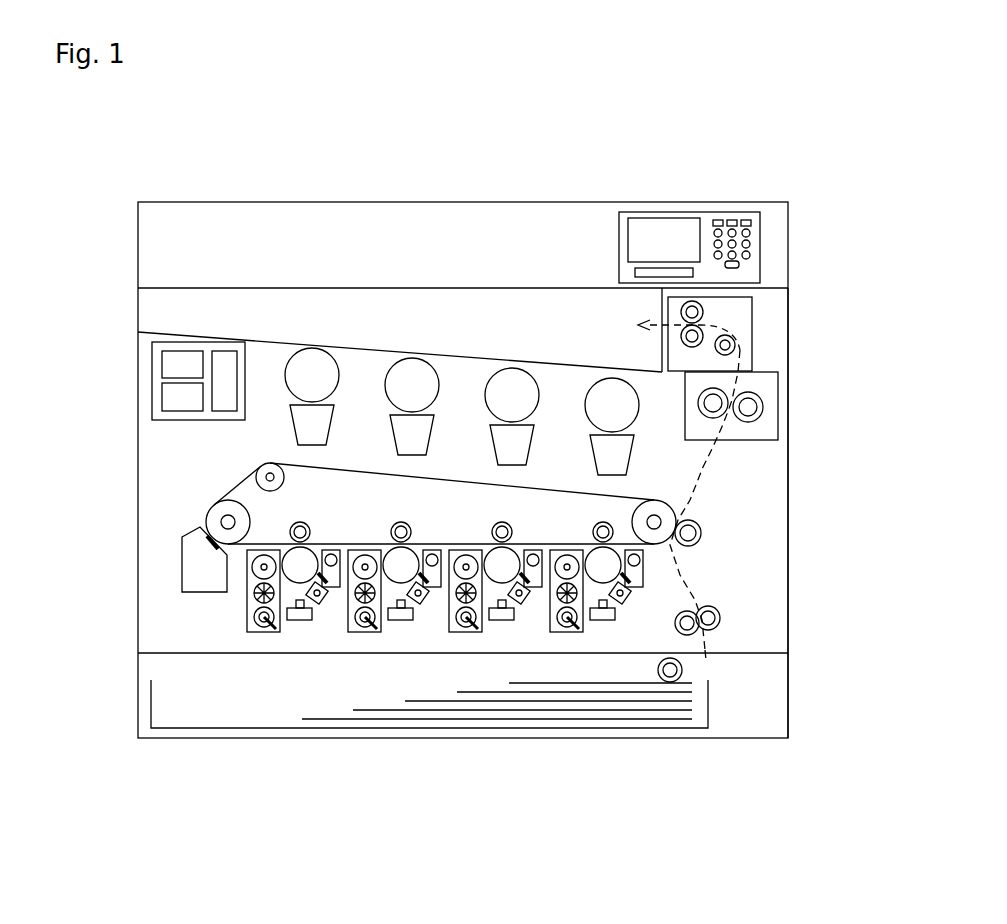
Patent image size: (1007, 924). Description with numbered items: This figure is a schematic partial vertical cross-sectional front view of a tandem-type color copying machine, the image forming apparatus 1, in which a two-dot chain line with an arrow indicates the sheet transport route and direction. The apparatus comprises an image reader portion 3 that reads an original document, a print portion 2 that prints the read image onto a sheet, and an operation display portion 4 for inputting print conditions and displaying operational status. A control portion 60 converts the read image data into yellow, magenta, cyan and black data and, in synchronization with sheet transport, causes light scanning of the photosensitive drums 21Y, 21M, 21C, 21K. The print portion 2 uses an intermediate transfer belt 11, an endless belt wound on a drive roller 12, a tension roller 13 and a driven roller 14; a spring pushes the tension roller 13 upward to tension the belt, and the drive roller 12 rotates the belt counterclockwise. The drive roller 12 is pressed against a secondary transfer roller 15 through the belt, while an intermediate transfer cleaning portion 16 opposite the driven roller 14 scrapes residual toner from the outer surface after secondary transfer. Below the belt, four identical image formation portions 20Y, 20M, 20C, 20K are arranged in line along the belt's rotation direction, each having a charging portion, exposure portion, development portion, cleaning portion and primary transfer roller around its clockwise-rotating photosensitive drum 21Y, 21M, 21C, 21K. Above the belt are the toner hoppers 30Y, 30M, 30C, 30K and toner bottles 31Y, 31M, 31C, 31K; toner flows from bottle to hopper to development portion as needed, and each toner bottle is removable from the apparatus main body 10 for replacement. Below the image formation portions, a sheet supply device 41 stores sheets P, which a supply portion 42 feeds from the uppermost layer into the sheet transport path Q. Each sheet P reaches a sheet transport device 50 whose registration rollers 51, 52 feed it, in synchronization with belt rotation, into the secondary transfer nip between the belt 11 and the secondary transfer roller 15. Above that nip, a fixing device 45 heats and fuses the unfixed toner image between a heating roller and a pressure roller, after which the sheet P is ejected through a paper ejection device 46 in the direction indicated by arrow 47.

The image forming apparatus 1 is at (133, 167).
The print portion 2 is at (795, 345).
The image reader portion 3 is at (325, 197).
The operation display portion 4 is at (757, 242).
The apparatus main body 10 is at (760, 460).
The intermediate transfer belt 11 is at (232, 492).
The drive roller 12 is at (660, 510).
The tension roller 13 is at (262, 470).
The driven roller 14 is at (210, 525).
The secondary transfer roller 15 is at (702, 533).
The intermediate transfer cleaning portion 16 is at (182, 565).
The image formation portion 20Y is at (293, 630).
The image formation portion 20M is at (394, 630).
The image formation portion 20C is at (495, 630).
The image formation portion 20K is at (596, 630).
The photosensitive drum 21Y is at (297, 548).
The photosensitive drum 21M is at (398, 548).
The photosensitive drum 21C is at (499, 548).
The photosensitive drum 21K is at (600, 548).
The toner hopper 30Y is at (295, 417).
The toner hopper 30M is at (395, 427).
The toner hopper 30C is at (495, 437).
The toner hopper 30K is at (595, 447).
The toner bottle 31Y is at (291, 356).
The toner bottle 31M is at (391, 366).
The toner bottle 31C is at (491, 376).
The toner bottle 31K is at (591, 386).
The sheet supply device 41 is at (713, 718).
The supply portion 42 is at (686, 670).
The fixing device 45 is at (773, 427).
The paper ejection device 46 is at (760, 312).
The discharge direction 47 is at (652, 362).
The sheet transport device 50 is at (727, 628).
The registration roller 51 is at (722, 613).
The registration roller 52 is at (710, 640).
The control portion 60 is at (150, 355).
The sheet P is at (660, 703).
The sheet transport path Q is at (683, 577).